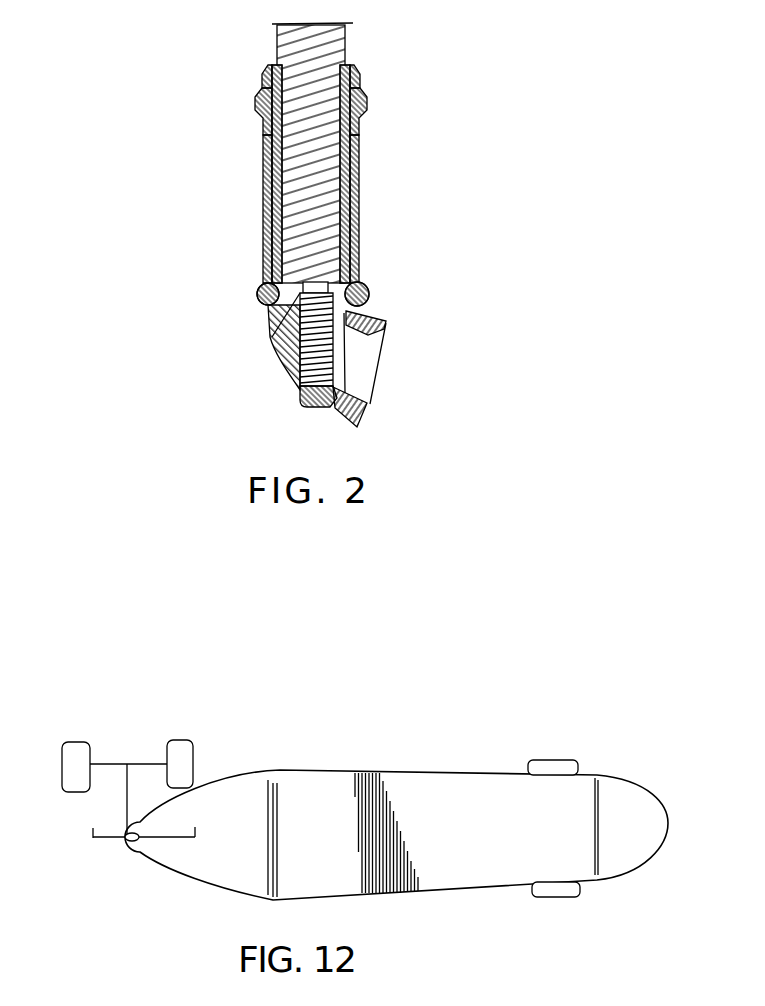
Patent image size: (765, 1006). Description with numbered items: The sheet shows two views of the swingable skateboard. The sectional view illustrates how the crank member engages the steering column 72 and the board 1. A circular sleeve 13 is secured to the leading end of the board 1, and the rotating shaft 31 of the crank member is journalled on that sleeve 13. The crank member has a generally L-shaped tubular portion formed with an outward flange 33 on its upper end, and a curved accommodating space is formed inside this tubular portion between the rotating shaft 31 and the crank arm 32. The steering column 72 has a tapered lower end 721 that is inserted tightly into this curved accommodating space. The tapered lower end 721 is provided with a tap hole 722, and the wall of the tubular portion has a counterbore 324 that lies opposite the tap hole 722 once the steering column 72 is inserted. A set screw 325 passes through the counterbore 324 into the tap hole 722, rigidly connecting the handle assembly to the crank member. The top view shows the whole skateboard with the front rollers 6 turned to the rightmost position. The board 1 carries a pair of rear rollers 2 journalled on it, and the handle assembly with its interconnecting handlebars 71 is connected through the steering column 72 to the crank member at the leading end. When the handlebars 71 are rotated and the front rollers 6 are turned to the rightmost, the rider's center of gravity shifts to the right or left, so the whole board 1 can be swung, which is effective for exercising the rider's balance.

In FIG. 2, the steering column 72 is at (291, 47).
In FIG. 2, the outward flange 33 is at (358, 76).
In FIG. 2, the circular sleeve 13 is at (362, 119).
In FIG. 12, the circular sleeve 13 is at (127, 840).
In FIG. 2, the rotating shaft 31 is at (354, 157).
In FIG. 2, the crank arm 32 is at (372, 318).
In FIG. 2, the tapered lower end 721 is at (296, 266).
In FIG. 2, the tap hole 722 is at (273, 346).
In FIG. 2, the set screw 325 is at (299, 395).
In FIG. 2, the counterbore 324 is at (334, 410).
In FIG. 12, the base board 1 is at (341, 773).
In FIG. 12, the rear rollers 2 is at (540, 767).
In FIG. 12, the front rollers 6 is at (180, 742).
In FIG. 12, the handlebars 71 is at (125, 838).